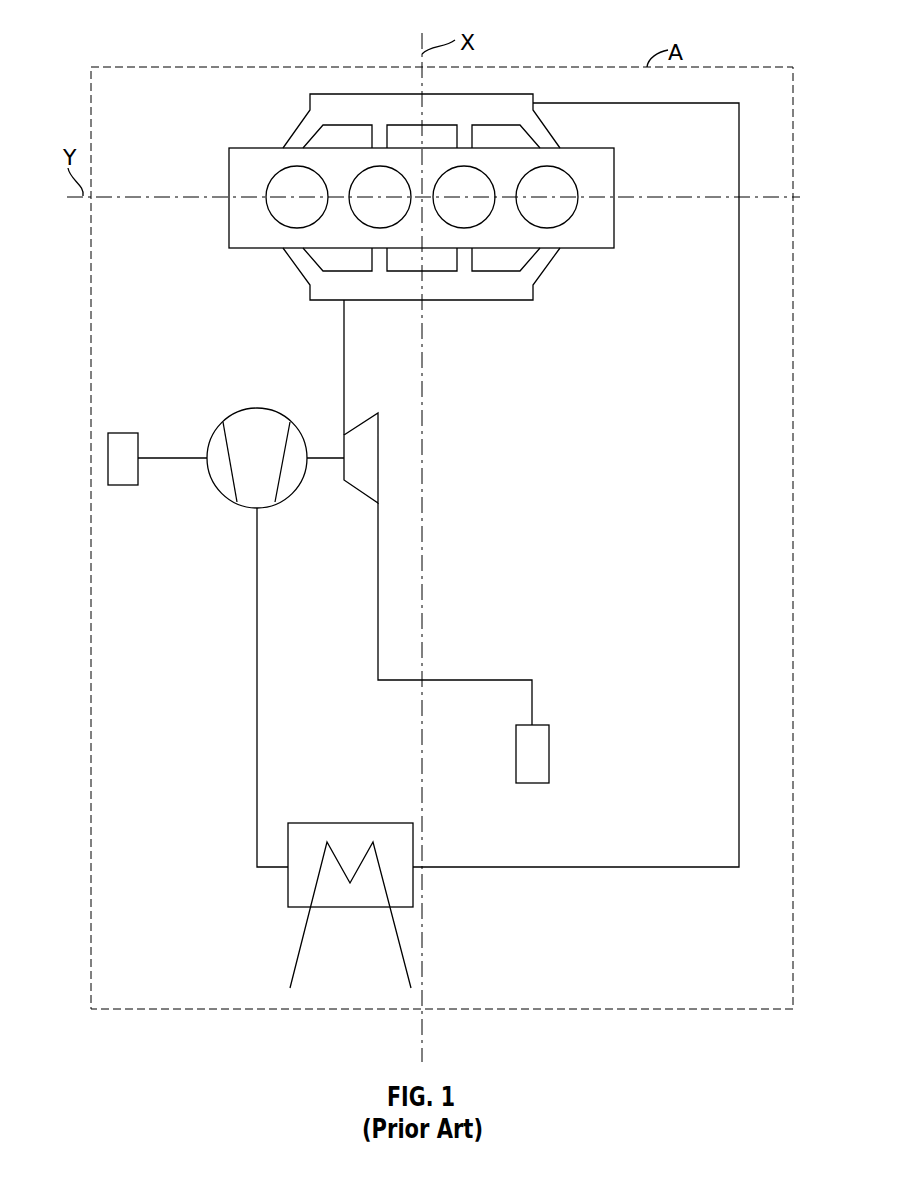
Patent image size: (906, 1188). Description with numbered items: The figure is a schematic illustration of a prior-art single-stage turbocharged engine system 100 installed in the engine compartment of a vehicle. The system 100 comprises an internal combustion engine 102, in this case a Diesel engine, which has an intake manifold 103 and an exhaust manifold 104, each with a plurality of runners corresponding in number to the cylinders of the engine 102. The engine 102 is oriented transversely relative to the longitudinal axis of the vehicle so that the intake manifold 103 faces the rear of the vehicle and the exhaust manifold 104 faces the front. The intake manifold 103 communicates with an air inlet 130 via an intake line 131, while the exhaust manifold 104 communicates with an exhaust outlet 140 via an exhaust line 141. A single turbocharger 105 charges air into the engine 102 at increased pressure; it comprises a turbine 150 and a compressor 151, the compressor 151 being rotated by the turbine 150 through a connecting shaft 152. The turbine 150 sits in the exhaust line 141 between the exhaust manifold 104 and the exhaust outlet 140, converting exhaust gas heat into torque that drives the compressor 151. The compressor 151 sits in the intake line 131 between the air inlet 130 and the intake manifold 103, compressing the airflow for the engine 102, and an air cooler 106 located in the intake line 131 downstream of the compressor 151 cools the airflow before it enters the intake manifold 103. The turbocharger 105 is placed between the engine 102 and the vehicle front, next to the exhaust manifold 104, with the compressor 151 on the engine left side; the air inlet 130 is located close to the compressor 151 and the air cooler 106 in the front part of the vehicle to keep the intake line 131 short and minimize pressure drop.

The single-stage turbocharged engine system 100 is at (131, 27).
The internal combustion engine 102 is at (607, 230).
The intake manifold 103 is at (515, 98).
The exhaust manifold 104 is at (528, 288).
The single turbocharger 105 is at (317, 407).
The air cooler 106 is at (287, 895).
The air inlet 130 is at (123, 485).
The intake line 131 is at (737, 484).
The exhaust outlet 140 is at (537, 747).
The exhaust line 141 is at (377, 600).
The turbine 150 is at (367, 458).
The compressor 151 is at (222, 483).
The connecting shaft 152 is at (330, 457).